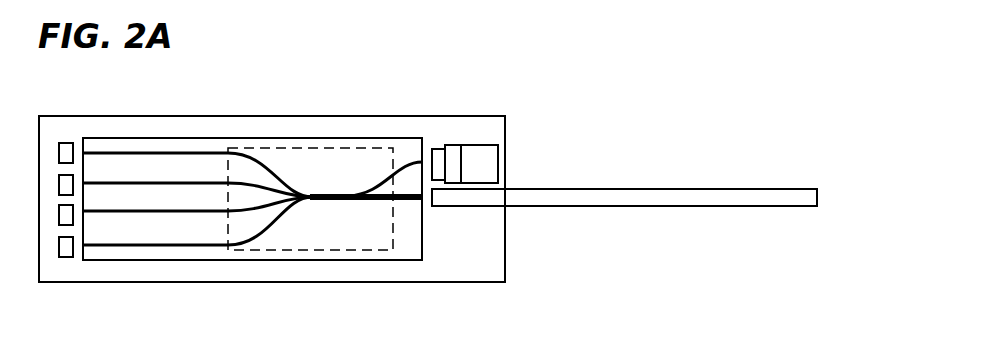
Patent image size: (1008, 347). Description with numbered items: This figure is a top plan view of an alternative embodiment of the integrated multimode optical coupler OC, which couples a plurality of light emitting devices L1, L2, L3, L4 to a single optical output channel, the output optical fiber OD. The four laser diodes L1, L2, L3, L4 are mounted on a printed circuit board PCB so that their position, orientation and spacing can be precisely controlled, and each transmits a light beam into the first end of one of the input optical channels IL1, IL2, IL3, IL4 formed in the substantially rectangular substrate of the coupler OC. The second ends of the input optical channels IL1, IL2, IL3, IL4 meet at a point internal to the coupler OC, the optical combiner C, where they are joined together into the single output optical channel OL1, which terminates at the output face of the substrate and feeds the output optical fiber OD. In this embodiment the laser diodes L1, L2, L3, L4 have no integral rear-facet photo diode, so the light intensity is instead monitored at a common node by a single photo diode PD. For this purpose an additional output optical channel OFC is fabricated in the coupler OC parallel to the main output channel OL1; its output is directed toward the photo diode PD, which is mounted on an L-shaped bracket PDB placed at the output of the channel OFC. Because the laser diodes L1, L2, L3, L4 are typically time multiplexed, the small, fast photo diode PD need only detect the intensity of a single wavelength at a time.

The light emitting device L1 is at (61, 142).
The light emitting device L2 is at (58, 185).
The light emitting device L3 is at (58, 213).
The light emitting device L4 is at (60, 257).
The input optical channel IL1 is at (123, 152).
The input optical channel IL2 is at (177, 183).
The input optical channel IL3 is at (135, 215).
The input optical channel IL4 is at (180, 248).
The integrated multimode optical coupler OC is at (240, 137).
The printed circuit board PCB is at (353, 116).
The optical combiner C is at (363, 148).
The additional output optical channel OFC is at (370, 183).
The output optical channel OL1 is at (405, 205).
The photo diode PD is at (437, 157).
The L-shaped bracket PDB is at (453, 153).
The output optical fiber OD is at (628, 192).